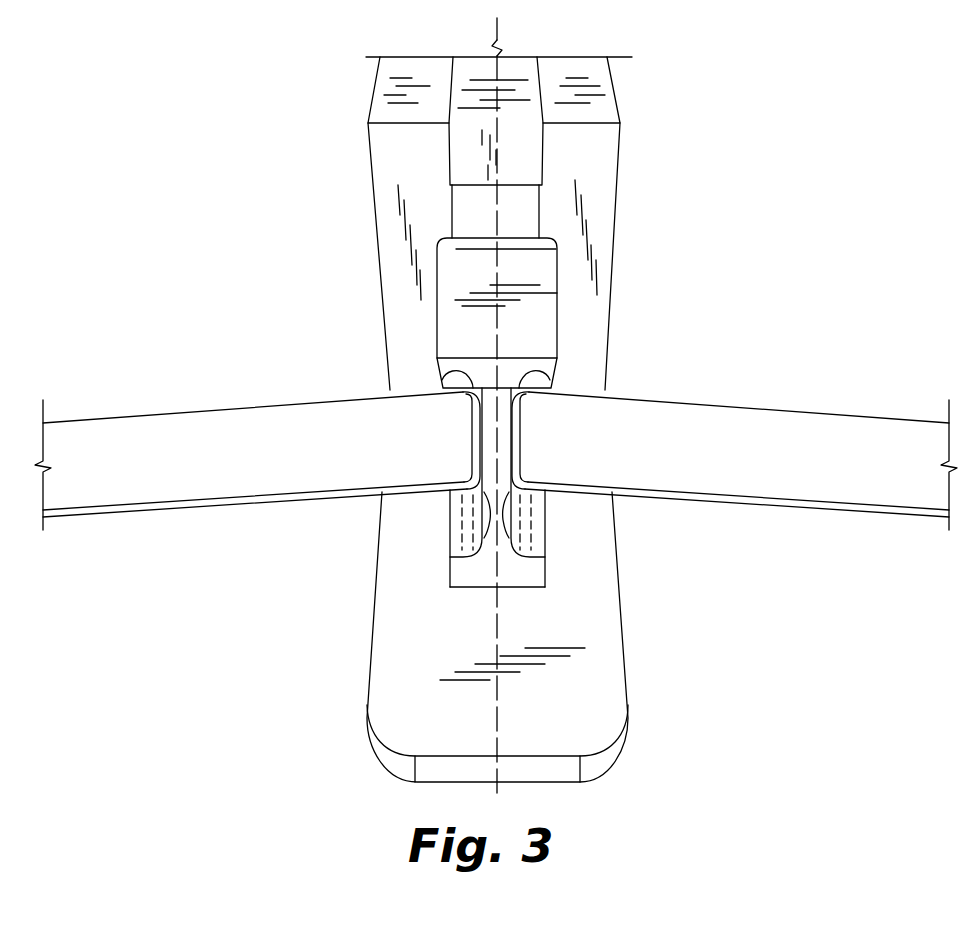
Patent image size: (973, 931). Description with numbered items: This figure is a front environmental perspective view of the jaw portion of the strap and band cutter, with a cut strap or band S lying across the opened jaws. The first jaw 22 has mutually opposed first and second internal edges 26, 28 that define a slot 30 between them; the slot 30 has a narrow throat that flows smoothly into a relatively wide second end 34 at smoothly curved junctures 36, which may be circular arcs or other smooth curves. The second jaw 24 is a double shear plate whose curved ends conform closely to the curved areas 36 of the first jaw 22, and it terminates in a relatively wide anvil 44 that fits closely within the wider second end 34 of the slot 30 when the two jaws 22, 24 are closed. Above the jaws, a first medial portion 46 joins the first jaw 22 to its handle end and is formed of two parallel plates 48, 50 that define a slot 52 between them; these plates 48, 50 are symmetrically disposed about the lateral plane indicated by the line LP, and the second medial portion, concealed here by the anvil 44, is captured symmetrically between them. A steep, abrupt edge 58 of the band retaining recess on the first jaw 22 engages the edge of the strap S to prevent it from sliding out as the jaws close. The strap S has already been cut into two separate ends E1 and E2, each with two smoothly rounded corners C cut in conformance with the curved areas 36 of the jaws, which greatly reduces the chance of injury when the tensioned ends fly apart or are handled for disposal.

The first jaw 22 is at (372, 632).
The second jaw 24 is at (500, 223).
The first internal edge 26 is at (482, 520).
The second internal edge 28 is at (508, 522).
The slot 30 is at (485, 565).
The second end 34 is at (445, 573).
The curved junctures 36 is at (463, 373).
The anvil 44 is at (558, 313).
The first medial portion 46 is at (369, 148).
The first plate 48 is at (620, 148).
The second plate 50 is at (377, 227).
The slot 52 is at (546, 211).
The abrupt edge 58 is at (433, 487).
The strap or band S is at (118, 415).
The curved corners C is at (527, 412).
The first end E1 is at (438, 429).
The second end E2 is at (607, 443).
The lateral plane LP is at (495, 44).